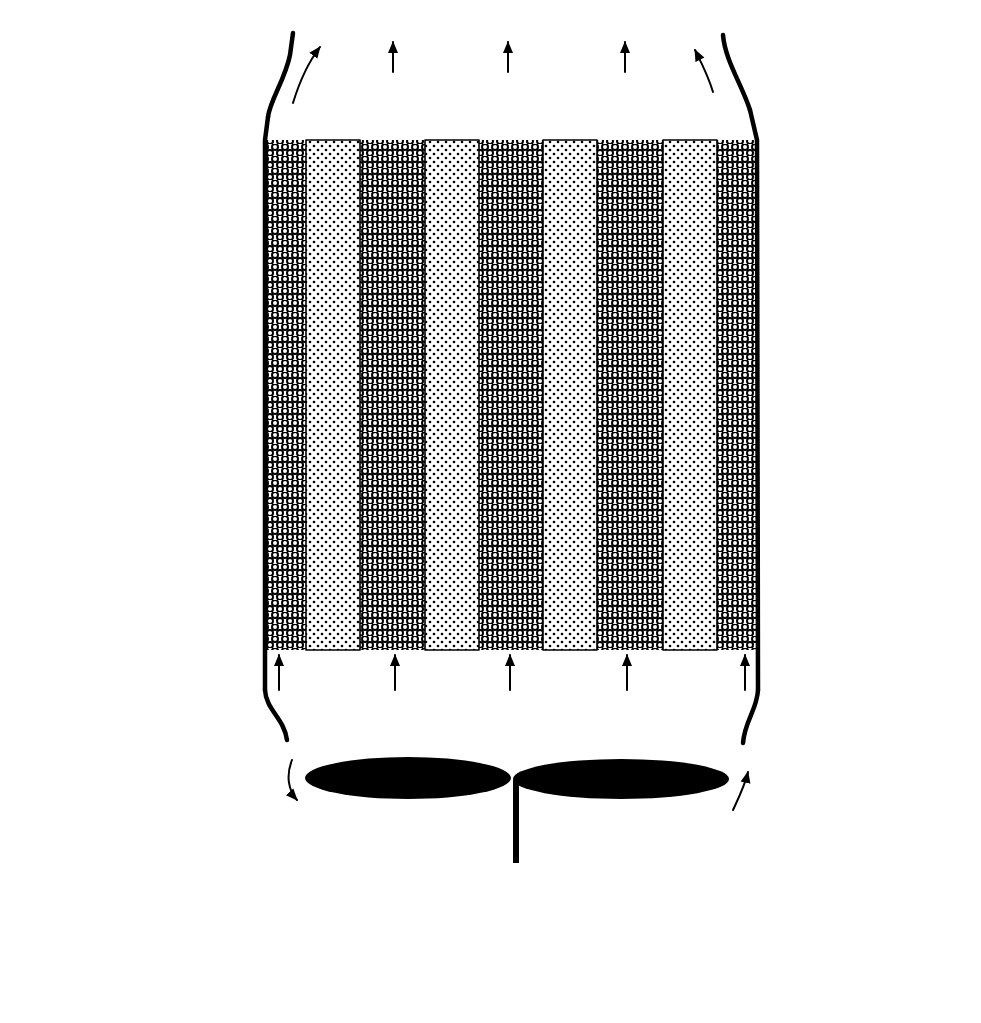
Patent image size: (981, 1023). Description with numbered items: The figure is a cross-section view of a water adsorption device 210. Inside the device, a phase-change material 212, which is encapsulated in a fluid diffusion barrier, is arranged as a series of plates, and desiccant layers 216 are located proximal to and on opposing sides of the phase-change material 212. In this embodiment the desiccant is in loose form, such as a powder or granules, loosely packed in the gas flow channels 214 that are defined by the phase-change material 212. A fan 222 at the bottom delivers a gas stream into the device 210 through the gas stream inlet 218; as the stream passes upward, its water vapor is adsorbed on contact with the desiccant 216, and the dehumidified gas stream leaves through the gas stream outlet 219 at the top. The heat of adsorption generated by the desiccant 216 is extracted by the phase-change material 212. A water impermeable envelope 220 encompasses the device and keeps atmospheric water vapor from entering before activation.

The water adsorption device 210 is at (195, 337).
The phase-change material 212 is at (452, 139).
The gas flow channels 214 is at (495, 650).
The desiccant layers 216 is at (632, 148).
The gas stream inlet 218 is at (747, 707).
The gas stream outlet 219 is at (737, 71).
The water impermeable envelope 220 is at (569, 388).
The fan 222 is at (520, 840).